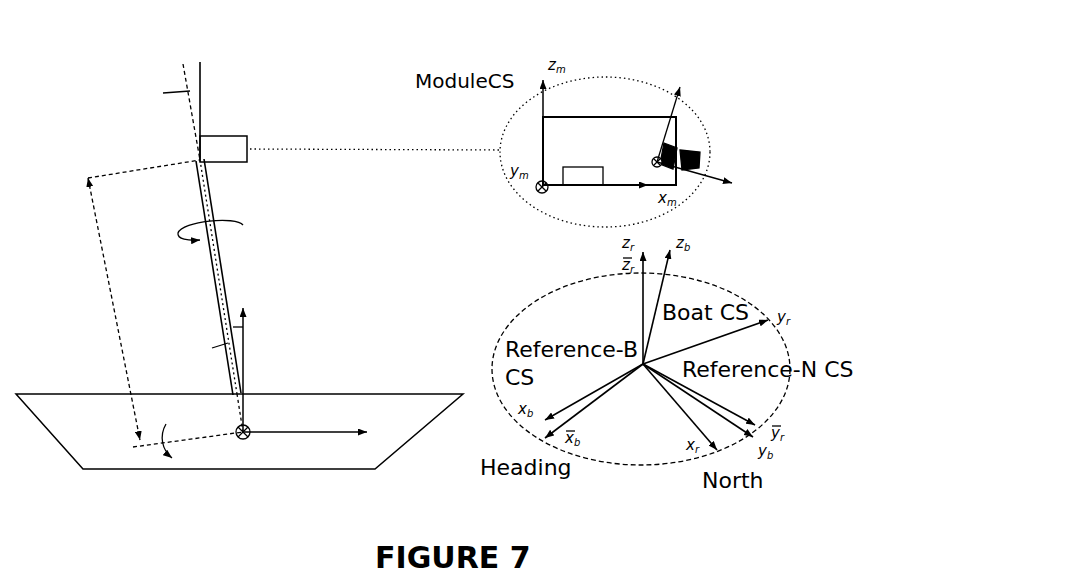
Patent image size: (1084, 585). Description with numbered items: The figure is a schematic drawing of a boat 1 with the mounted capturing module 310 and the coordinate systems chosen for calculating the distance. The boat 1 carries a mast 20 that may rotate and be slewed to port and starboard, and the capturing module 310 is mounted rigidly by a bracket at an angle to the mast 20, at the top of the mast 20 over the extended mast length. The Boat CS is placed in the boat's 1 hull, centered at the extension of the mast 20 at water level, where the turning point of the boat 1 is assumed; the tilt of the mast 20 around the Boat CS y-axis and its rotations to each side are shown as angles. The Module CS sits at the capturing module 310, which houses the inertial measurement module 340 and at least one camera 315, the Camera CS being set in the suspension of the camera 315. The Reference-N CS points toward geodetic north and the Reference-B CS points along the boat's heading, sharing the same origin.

The boat 1 is at (353, 293).
The mast 20 is at (220, 270).
The capturing module 310 is at (607, 117).
The camera 315 is at (682, 149).
The inertial measurement module 340 is at (588, 180).